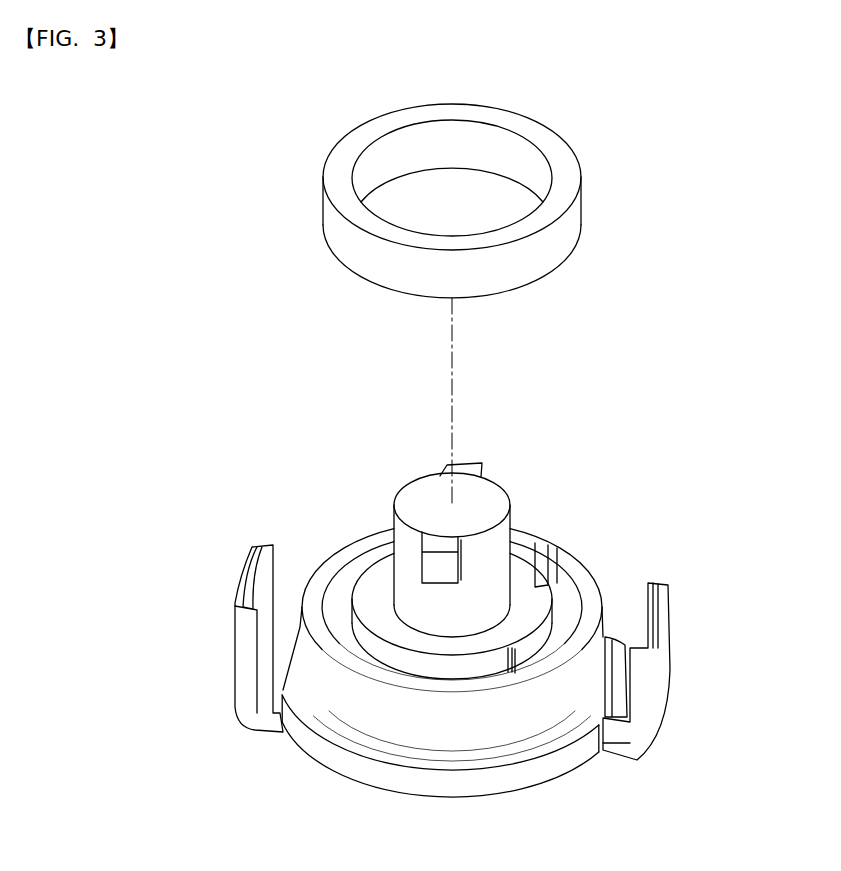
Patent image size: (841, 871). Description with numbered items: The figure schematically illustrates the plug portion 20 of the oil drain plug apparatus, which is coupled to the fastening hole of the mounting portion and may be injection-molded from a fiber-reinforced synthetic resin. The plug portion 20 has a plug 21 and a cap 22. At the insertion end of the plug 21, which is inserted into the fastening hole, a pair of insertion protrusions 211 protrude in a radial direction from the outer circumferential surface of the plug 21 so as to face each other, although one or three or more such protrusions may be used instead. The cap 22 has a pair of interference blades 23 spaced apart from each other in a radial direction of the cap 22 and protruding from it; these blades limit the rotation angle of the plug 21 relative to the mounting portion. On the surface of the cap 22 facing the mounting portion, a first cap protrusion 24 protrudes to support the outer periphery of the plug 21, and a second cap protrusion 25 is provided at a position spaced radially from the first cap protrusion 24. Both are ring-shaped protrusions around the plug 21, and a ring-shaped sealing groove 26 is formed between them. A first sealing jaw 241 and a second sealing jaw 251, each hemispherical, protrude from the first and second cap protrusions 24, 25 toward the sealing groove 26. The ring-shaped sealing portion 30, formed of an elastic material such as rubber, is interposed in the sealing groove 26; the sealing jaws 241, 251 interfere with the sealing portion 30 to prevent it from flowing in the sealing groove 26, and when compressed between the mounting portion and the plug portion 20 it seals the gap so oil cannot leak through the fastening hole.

The plug portion 20 is at (450, 619).
The plug 21 is at (495, 600).
The insertion protrusion 211 is at (447, 465).
The cap 22 is at (592, 658).
The interference blade 23 is at (242, 643).
The first cap protrusion 24 is at (370, 617).
The first sealing jaw 241 is at (517, 658).
The second cap protrusion 25 is at (413, 680).
The second sealing jaw 251 is at (543, 558).
The sealing groove 26 is at (352, 570).
The sealing portion 30 is at (567, 166).